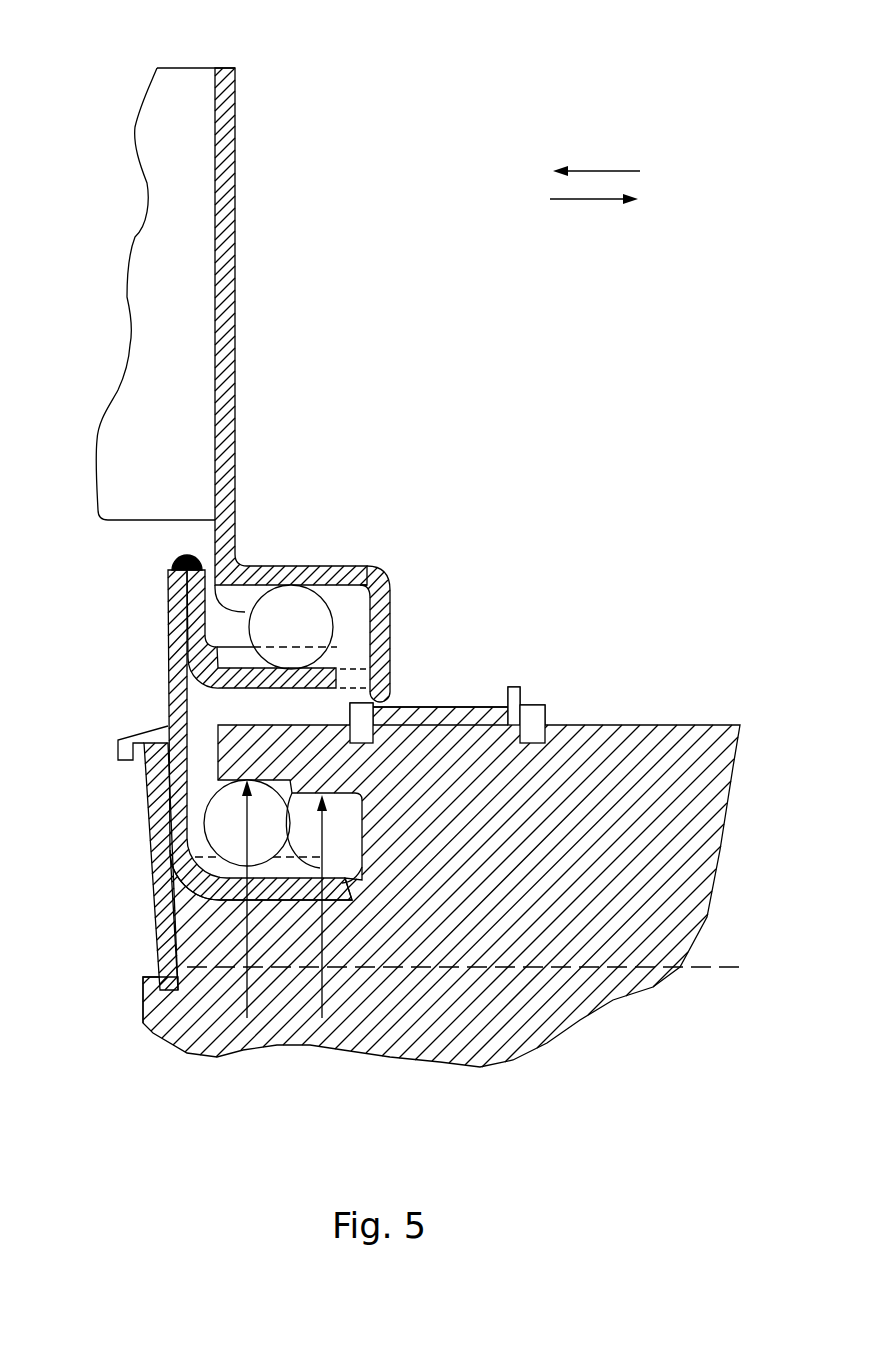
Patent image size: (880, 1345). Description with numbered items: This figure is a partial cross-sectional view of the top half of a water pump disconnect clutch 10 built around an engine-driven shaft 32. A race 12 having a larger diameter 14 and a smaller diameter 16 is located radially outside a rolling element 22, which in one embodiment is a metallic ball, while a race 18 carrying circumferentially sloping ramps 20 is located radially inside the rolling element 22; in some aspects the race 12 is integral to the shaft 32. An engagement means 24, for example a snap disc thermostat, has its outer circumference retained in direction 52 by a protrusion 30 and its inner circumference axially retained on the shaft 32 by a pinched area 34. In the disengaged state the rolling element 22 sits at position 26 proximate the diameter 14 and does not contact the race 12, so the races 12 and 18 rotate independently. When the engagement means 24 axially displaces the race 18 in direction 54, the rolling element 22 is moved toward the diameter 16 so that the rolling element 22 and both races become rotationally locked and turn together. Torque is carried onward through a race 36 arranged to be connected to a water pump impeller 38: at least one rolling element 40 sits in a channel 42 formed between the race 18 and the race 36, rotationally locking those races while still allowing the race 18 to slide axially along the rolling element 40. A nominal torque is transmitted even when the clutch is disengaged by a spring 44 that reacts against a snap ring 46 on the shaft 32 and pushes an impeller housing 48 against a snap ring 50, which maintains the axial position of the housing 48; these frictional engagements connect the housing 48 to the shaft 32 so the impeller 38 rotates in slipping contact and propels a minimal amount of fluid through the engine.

The water pump disconnect clutch 10 is at (399, 382).
The race 12 is at (283, 920).
The diameter 14 is at (245, 1003).
The diameter 16 is at (323, 1006).
The race 18 is at (310, 680).
The ramps 20 is at (372, 676).
The rolling element 22 is at (203, 790).
The engagement means 24 is at (165, 912).
The position 26 is at (205, 818).
The protrusion 30 is at (150, 736).
The shaft 32 is at (505, 860).
The pinched area 34 is at (145, 985).
The race 36 is at (297, 573).
The water pump impeller 38 is at (175, 220).
The rolling element 40 is at (355, 626).
The channel 42 is at (365, 577).
The spring 44 is at (515, 685).
The snap ring 46 is at (535, 712).
The impeller housing 48 is at (478, 712).
The snap ring 50 is at (360, 728).
The direction 52 is at (596, 158).
The direction 54 is at (594, 211).